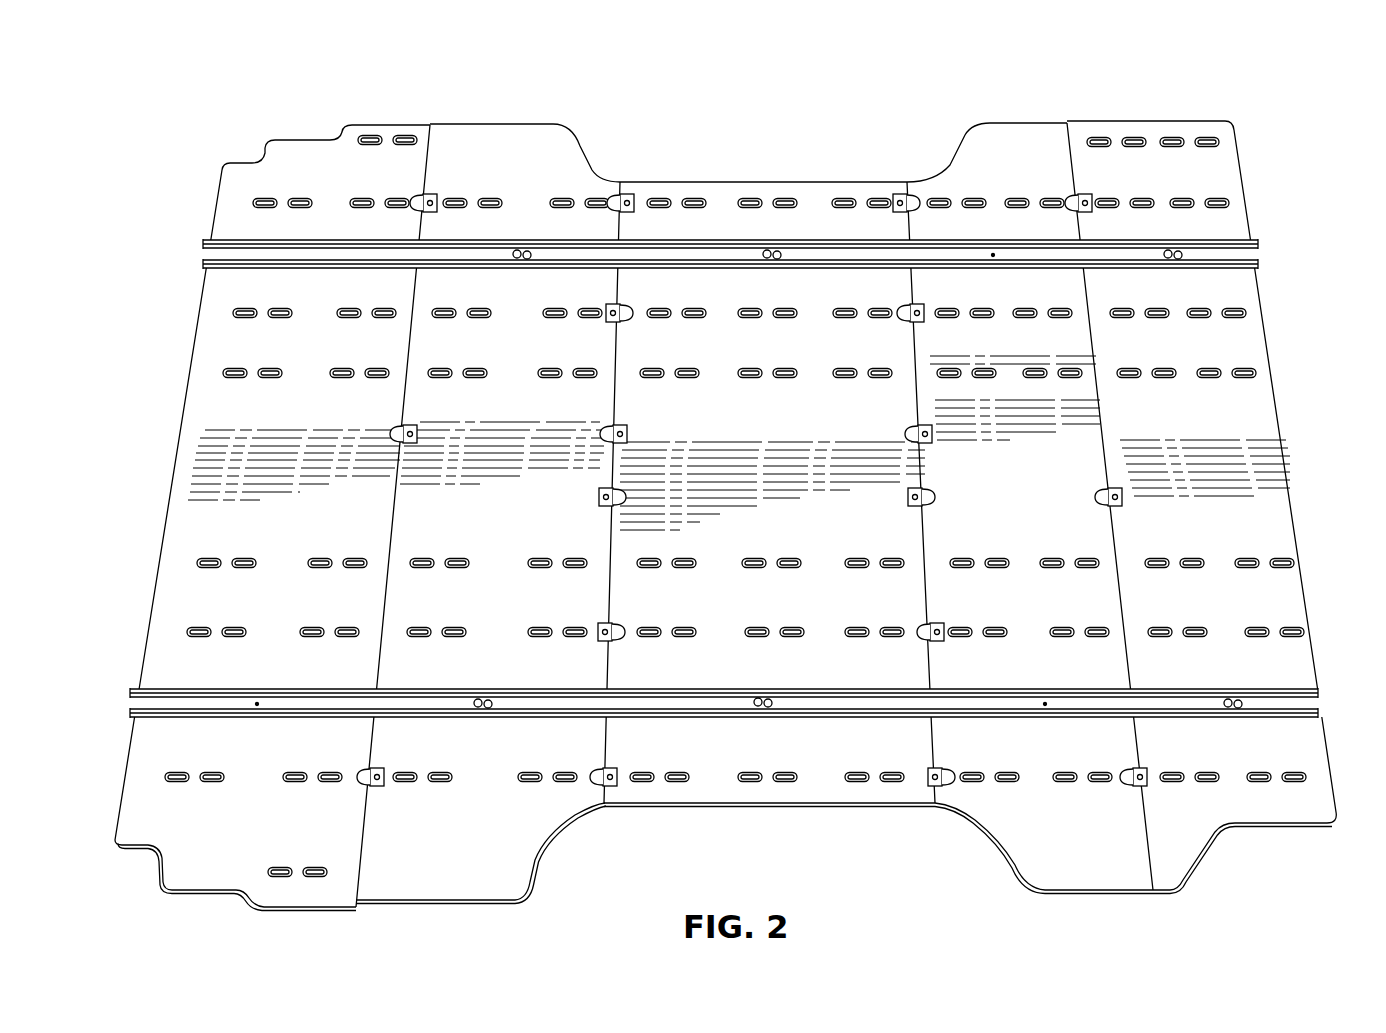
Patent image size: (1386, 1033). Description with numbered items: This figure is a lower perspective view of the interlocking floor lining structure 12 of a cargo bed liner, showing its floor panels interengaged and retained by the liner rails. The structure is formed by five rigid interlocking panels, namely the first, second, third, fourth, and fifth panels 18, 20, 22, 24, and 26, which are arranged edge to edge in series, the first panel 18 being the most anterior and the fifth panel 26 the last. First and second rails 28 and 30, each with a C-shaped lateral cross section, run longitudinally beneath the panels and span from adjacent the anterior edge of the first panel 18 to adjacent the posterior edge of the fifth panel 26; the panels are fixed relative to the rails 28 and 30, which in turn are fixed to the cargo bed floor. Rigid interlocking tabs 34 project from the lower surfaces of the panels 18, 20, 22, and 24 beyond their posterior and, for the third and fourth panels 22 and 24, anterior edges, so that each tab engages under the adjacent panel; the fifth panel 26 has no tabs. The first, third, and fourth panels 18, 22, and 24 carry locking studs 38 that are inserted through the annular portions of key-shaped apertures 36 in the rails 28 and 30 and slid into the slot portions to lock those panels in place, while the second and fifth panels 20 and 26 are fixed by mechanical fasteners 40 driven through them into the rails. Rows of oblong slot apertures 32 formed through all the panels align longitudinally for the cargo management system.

The interlocking floor lining structure 12 is at (962, 86).
The first interlocking panel 18 is at (1272, 805).
The second interlocking panel 20 is at (1085, 860).
The third interlocking panel 22 is at (720, 795).
The fourth interlocking panel 24 is at (488, 537).
The fifth interlocking panel 26 is at (226, 870).
The first rail 28 is at (724, 720).
The second rail 30 is at (712, 256).
The aperture 32 is at (437, 790).
The interlocking tab 34 is at (950, 794).
The key-shaped aperture 36 is at (760, 706).
The locking stud 38 is at (760, 698).
The mechanical fastener 40 is at (323, 257).